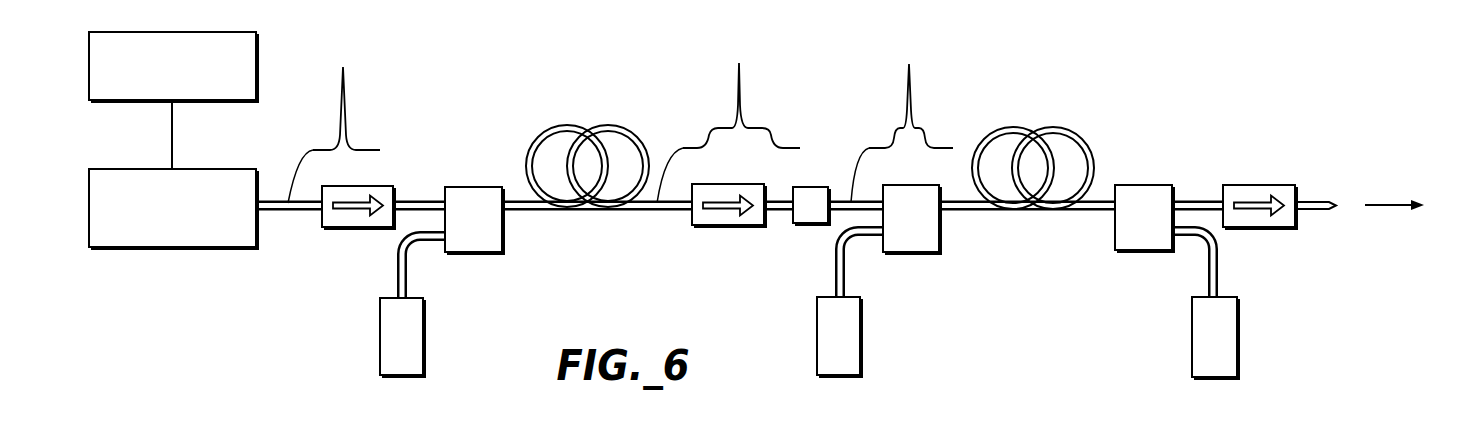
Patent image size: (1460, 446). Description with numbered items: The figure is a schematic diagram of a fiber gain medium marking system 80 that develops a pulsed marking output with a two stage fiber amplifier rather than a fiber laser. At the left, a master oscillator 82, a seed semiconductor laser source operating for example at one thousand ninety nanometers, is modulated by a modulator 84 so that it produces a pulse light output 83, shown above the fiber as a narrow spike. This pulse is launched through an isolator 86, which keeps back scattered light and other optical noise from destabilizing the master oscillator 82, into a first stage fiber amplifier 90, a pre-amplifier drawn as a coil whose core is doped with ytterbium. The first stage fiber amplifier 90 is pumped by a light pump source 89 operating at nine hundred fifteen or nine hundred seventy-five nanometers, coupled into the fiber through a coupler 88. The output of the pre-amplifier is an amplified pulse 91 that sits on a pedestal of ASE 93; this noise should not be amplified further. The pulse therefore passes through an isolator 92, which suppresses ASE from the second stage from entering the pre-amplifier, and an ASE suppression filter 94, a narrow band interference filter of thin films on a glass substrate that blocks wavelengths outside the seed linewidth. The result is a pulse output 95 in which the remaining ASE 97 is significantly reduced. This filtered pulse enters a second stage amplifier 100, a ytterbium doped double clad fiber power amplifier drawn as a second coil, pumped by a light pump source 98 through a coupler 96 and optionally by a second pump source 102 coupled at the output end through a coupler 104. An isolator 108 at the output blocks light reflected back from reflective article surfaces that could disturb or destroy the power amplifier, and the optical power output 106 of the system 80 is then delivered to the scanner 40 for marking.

The scanner 40 is at (1382, 168).
The fiber gain medium marking system 80 is at (540, 46).
The master oscillator 82 is at (197, 169).
The pulse light output 83 is at (348, 117).
The modulator 84 is at (186, 32).
The isolator 86 is at (348, 229).
The coupler 88 is at (480, 253).
The light pump source 89 is at (380, 325).
The first stage fiber amplifier 90 is at (568, 125).
The amplified pulse 91 is at (743, 100).
The isolator 92 is at (740, 227).
The ASE 93 is at (716, 128).
The ASE suppression filter 94 is at (812, 224).
The pulse output 95 is at (913, 100).
The coupler 96 is at (912, 253).
The ASE 97 is at (893, 128).
The light pump source 98 is at (817, 320).
The second stage amplifier 100 is at (1010, 127).
The second pump source 102 is at (1192, 322).
The coupler 104 is at (1148, 251).
The optical power output 106 is at (1400, 210).
The isolator 108 is at (1252, 228).